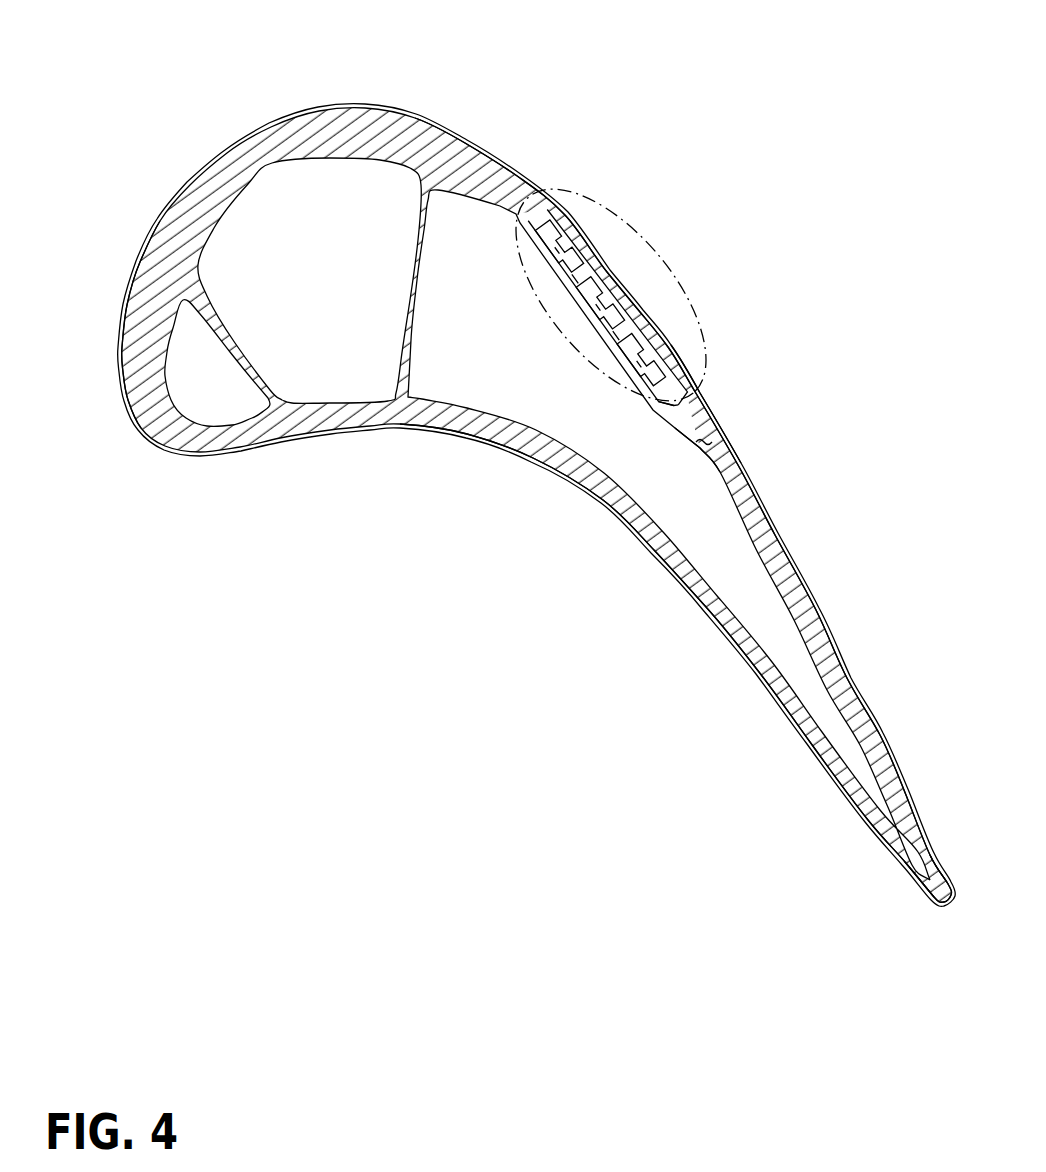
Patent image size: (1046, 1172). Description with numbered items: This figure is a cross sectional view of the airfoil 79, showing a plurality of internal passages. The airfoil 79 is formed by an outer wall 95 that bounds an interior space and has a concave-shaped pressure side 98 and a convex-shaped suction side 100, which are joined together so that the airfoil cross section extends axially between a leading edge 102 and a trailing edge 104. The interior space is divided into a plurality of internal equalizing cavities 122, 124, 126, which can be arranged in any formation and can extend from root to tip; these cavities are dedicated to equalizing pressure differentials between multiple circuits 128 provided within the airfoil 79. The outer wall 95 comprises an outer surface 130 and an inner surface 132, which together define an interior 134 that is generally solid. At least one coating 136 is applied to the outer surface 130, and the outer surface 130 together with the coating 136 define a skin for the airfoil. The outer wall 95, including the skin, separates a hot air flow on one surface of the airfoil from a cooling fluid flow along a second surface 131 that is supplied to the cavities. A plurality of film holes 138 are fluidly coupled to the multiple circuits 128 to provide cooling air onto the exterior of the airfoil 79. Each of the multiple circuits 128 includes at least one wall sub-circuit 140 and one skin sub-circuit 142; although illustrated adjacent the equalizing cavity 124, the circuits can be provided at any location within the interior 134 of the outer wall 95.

The airfoil 79 is at (457, 86).
The outer wall 95 is at (820, 618).
The pressure side 98 is at (576, 486).
The suction side 100 is at (749, 485).
The leading edge 102 is at (122, 388).
The trailing edge 104 is at (951, 905).
The equalizing cavity 122 is at (350, 262).
The equalizing cavity 124 is at (510, 370).
The equalizing cavity 126 is at (224, 400).
The multiple circuits 128 is at (601, 235).
The outer surface 130 is at (700, 402).
The second surface 131 is at (597, 307).
The inner surface 132 is at (669, 403).
The interior 134 is at (702, 448).
The coating 136 is at (712, 420).
The film holes 138 is at (600, 304).
The wall sub-circuit 140 is at (616, 304).
The skin sub-circuit 142 is at (601, 313).